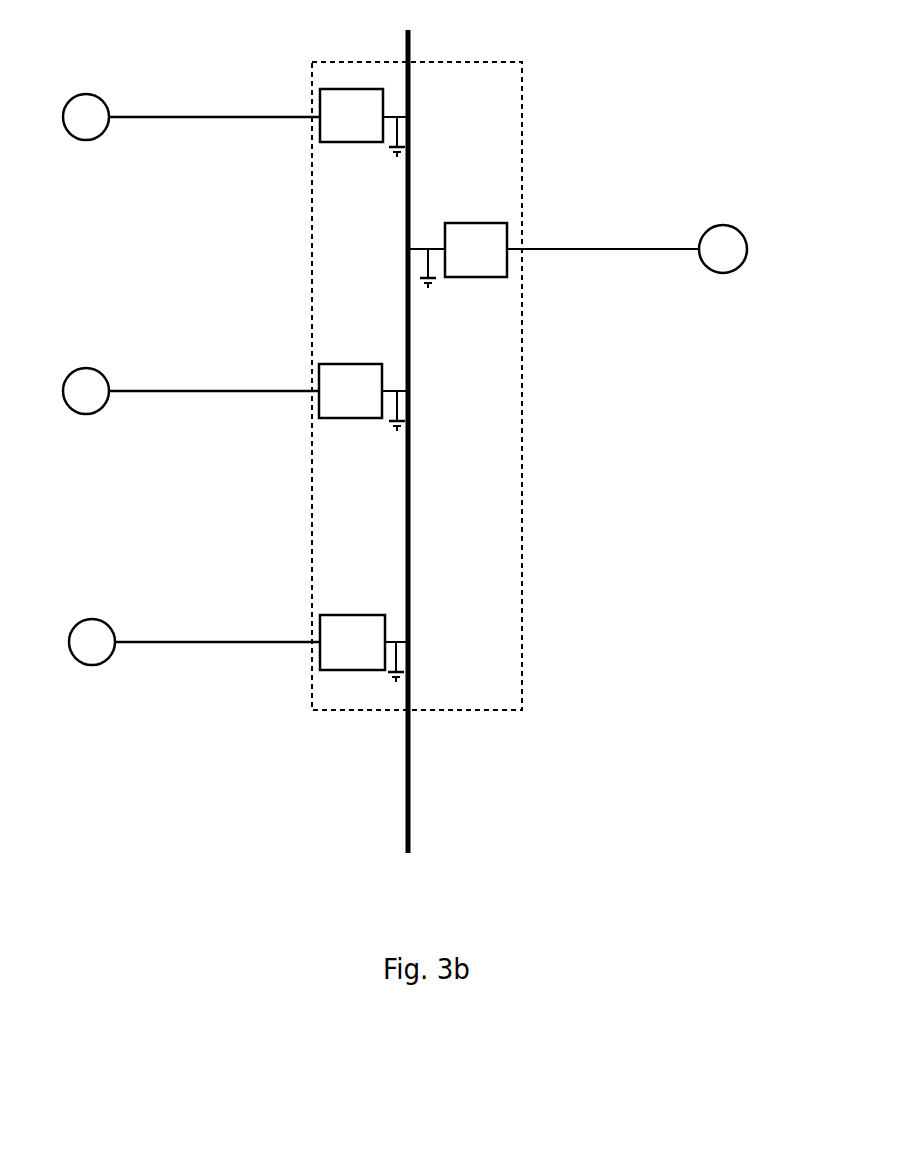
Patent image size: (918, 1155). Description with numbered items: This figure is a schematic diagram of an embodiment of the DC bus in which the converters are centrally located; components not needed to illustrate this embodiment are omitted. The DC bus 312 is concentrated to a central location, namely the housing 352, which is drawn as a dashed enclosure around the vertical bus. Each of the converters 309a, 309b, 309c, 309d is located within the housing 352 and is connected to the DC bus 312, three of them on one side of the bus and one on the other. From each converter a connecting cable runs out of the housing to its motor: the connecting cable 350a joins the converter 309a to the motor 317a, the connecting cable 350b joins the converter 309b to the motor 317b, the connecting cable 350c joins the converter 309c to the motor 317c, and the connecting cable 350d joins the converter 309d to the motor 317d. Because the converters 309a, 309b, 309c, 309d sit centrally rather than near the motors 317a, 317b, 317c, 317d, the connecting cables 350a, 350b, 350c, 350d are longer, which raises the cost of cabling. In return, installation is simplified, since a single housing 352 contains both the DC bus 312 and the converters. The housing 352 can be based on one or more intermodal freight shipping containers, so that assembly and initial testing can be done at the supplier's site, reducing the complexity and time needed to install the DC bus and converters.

The DC bus 312 is at (411, 810).
The housing 352 is at (470, 62).
The converter 309a is at (364, 123).
The converter 309b is at (363, 397).
The converter 309c is at (364, 648).
The converter 309d is at (457, 255).
The motor 317a is at (82, 93).
The motor 317b is at (90, 368).
The motor 317c is at (97, 620).
The motor 317d is at (745, 232).
The connecting cable 350a is at (203, 117).
The connecting cable 350b is at (201, 392).
The connecting cable 350c is at (190, 642).
The connecting cable 350d is at (597, 249).